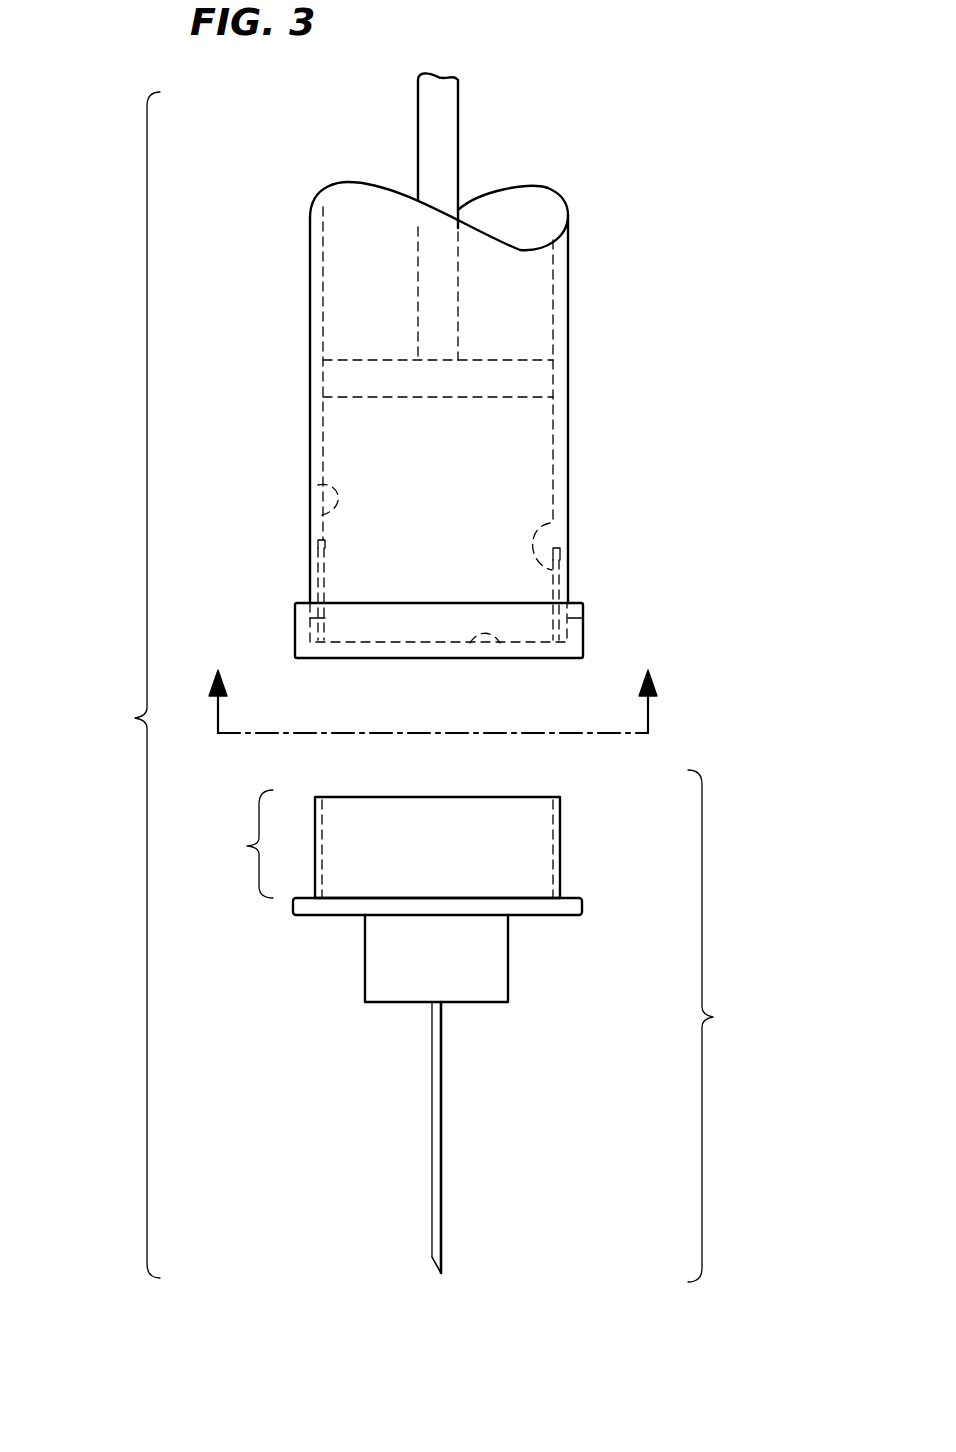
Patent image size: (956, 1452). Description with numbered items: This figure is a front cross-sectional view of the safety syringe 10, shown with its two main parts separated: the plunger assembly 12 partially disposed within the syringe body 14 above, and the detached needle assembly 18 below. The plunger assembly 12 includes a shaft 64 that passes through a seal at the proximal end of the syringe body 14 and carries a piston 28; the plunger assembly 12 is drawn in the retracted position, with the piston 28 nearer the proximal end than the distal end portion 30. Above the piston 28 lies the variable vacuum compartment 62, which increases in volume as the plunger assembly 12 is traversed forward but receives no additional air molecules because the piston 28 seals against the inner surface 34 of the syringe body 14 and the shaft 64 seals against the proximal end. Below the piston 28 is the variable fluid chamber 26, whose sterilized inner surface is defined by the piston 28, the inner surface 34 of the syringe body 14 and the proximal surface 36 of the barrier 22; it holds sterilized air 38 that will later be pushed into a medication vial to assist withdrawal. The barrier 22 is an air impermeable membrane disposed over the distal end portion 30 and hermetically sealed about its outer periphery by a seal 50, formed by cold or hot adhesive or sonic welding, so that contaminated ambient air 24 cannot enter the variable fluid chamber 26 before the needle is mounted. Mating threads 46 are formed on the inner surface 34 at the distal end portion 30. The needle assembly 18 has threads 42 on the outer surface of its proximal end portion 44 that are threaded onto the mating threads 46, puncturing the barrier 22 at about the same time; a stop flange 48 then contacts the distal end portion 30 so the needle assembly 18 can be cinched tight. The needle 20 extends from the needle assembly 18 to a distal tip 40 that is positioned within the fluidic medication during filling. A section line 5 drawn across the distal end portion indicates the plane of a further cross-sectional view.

The safety syringe 10 is at (130, 685).
The plunger assembly 12 is at (366, 124).
The syringe body 14 is at (568, 300).
The needle assembly 18 is at (720, 1026).
The needle 20 is at (441, 1093).
The barrier 22 is at (413, 650).
The ambient air 24 is at (326, 714).
The variable fluid chamber 26 is at (508, 457).
The piston 28 is at (530, 382).
The distal end portion 30 is at (618, 594).
The inner surface 34 is at (310, 490).
The proximal surface 36 is at (500, 650).
The sterilized air 38 is at (440, 549).
The distal tip 40 is at (441, 1273).
The threads 42 is at (560, 835).
The proximal end portion 44 is at (239, 844).
The mating threads 46 is at (548, 522).
The stop flange 48 is at (567, 915).
The seal 50 is at (300, 618).
The section line 5- 5 is at (432, 700).
The variable vacuum compartment 62 is at (525, 278).
The shaft 64 is at (445, 115).